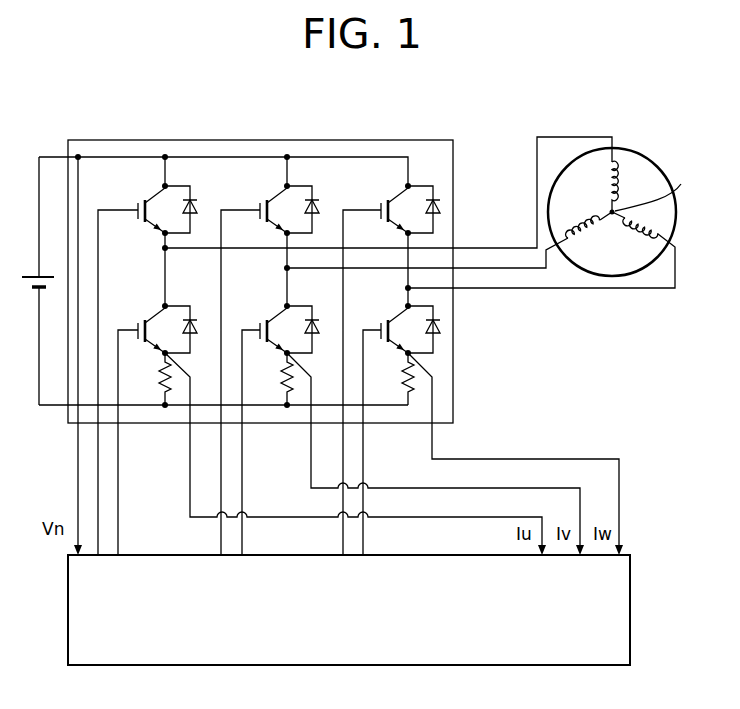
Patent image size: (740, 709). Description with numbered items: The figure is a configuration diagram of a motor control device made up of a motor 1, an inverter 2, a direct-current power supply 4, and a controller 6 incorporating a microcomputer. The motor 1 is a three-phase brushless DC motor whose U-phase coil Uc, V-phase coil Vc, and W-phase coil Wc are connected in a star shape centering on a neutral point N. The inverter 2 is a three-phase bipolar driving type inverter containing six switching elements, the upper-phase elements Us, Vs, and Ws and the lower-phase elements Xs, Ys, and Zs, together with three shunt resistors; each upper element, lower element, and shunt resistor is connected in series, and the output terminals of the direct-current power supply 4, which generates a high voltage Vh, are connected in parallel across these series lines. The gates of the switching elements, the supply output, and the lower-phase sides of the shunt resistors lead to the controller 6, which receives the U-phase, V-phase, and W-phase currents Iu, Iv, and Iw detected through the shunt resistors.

The motor 1 is at (636, 152).
The inverter 2 is at (146, 140).
The direct-current power supply 4 is at (39, 273).
The controller 6 is at (631, 575).